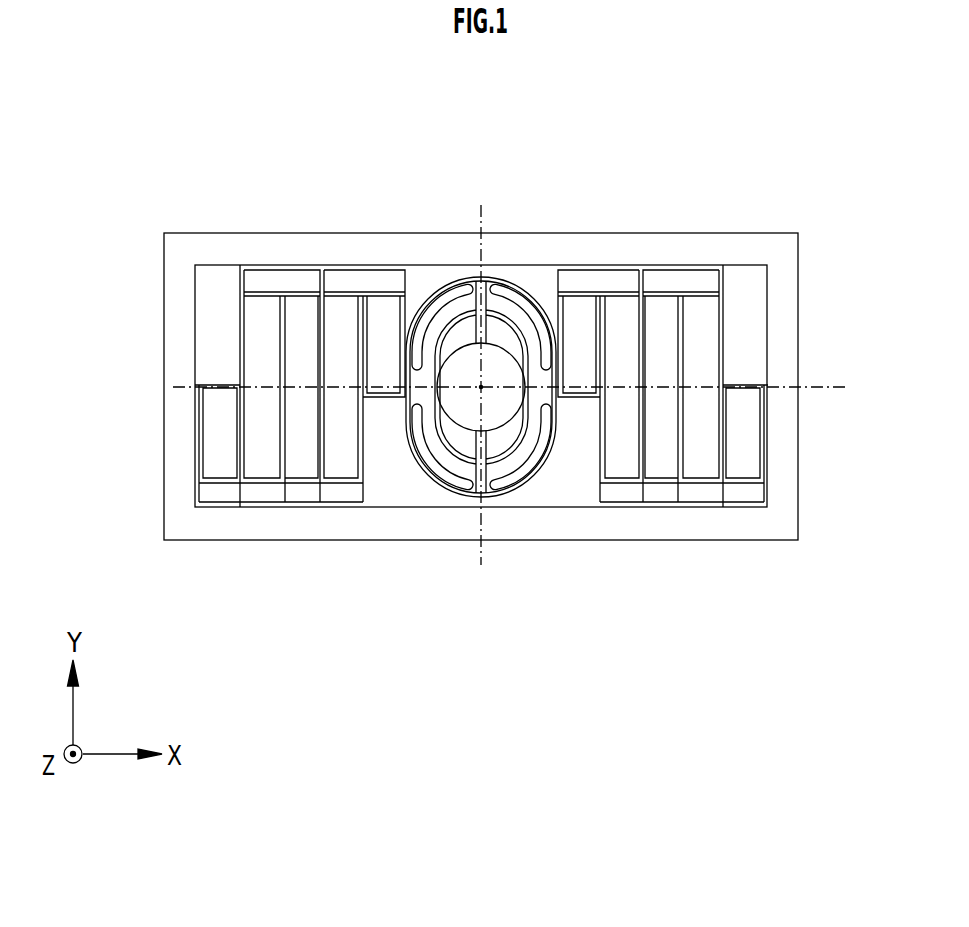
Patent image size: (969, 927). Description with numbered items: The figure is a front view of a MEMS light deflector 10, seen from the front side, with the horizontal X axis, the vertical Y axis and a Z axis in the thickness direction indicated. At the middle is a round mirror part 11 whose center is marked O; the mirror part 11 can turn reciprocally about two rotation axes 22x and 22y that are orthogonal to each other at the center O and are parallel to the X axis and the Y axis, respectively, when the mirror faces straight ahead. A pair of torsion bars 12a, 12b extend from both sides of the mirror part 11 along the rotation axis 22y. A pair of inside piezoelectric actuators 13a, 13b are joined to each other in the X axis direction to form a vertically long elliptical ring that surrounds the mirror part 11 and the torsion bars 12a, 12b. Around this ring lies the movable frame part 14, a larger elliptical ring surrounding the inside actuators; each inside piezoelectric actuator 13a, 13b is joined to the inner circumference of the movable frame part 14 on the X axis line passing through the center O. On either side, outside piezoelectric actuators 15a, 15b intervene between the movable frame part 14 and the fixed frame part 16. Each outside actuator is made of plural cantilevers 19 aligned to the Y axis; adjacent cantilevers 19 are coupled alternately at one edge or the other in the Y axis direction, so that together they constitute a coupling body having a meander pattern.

The light deflector 10 is at (326, 128).
The mirror part 11 is at (498, 408).
The torsion bar 12a is at (487, 342).
The torsion bar 12b is at (475, 437).
The inside piezoelectric actuator 13a is at (428, 414).
The inside piezoelectric actuator 13b is at (535, 415).
The movable frame part 14 is at (548, 333).
The outside piezoelectric actuator 15a is at (262, 249).
The outside piezoelectric actuator 15b is at (701, 249).
The fixed frame part 16 is at (748, 530).
The cantilever 19 is at (222, 467).
The rotation axis 22x is at (619, 385).
The rotation axis 22y is at (483, 550).
The center O is at (478, 389).